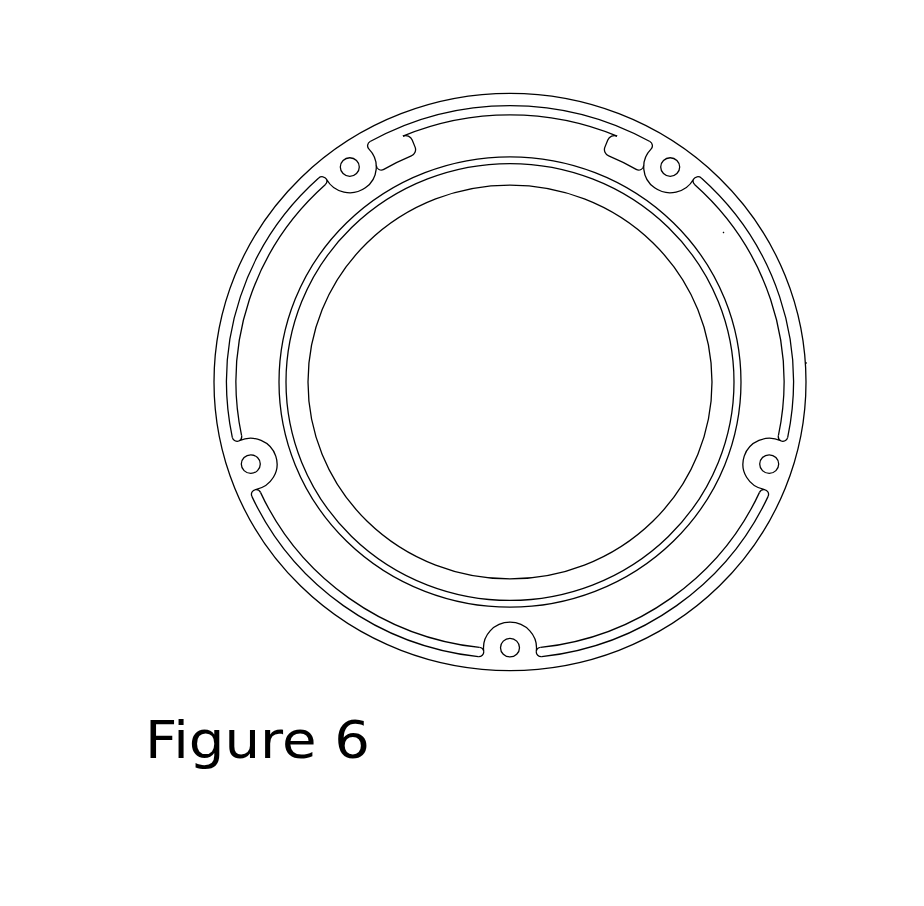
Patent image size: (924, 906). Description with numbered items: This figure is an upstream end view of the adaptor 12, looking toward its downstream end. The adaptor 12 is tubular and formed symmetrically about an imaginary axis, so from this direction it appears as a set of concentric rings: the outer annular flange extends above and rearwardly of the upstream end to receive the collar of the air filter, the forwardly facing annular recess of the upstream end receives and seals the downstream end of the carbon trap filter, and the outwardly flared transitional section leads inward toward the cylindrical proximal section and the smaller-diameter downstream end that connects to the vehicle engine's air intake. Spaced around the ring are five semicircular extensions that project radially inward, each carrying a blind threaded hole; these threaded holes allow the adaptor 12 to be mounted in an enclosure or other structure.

The adaptor 12 is at (536, 381).